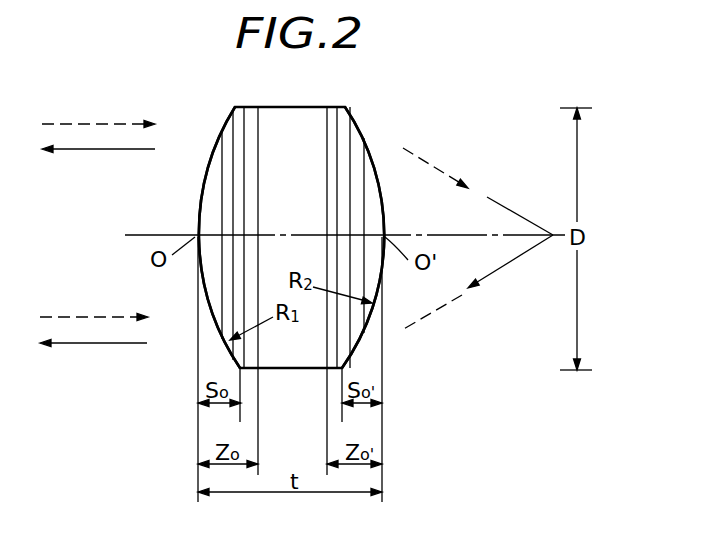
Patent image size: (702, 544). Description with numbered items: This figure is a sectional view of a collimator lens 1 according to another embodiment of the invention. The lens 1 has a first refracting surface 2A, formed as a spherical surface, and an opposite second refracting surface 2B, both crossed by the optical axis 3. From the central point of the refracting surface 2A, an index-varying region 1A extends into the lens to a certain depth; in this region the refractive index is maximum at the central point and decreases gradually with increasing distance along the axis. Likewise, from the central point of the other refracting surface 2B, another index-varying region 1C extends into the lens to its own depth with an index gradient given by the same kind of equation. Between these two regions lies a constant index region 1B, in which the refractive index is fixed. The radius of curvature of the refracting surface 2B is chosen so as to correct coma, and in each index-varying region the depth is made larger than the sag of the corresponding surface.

The collimator lens 1 is at (320, 107).
The index-varying region 1A is at (203, 200).
The constant index region 1B is at (301, 181).
The index-varying region 1C is at (360, 222).
The first refracting surface 2A is at (210, 150).
The second refracting surface 2B is at (367, 130).
The optical axis 3 is at (137, 233).